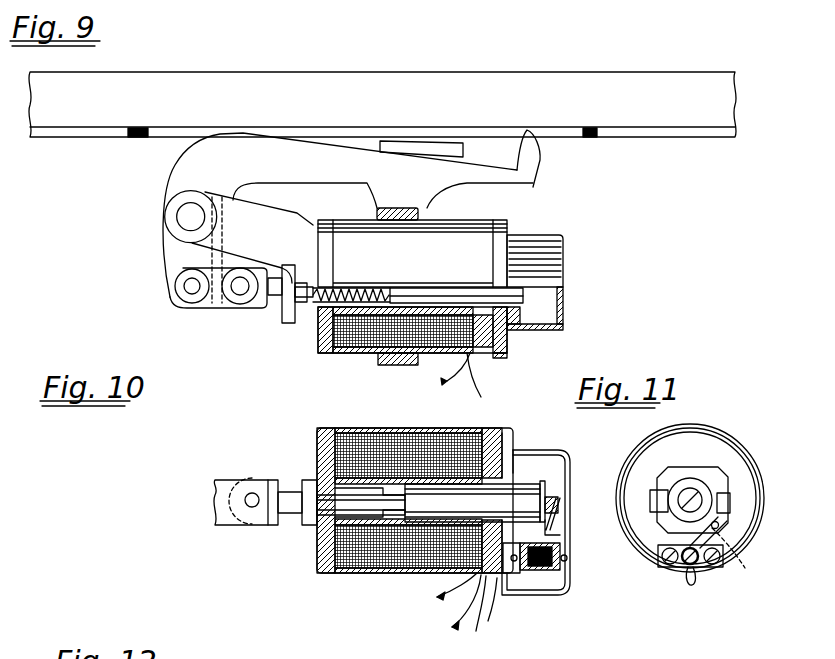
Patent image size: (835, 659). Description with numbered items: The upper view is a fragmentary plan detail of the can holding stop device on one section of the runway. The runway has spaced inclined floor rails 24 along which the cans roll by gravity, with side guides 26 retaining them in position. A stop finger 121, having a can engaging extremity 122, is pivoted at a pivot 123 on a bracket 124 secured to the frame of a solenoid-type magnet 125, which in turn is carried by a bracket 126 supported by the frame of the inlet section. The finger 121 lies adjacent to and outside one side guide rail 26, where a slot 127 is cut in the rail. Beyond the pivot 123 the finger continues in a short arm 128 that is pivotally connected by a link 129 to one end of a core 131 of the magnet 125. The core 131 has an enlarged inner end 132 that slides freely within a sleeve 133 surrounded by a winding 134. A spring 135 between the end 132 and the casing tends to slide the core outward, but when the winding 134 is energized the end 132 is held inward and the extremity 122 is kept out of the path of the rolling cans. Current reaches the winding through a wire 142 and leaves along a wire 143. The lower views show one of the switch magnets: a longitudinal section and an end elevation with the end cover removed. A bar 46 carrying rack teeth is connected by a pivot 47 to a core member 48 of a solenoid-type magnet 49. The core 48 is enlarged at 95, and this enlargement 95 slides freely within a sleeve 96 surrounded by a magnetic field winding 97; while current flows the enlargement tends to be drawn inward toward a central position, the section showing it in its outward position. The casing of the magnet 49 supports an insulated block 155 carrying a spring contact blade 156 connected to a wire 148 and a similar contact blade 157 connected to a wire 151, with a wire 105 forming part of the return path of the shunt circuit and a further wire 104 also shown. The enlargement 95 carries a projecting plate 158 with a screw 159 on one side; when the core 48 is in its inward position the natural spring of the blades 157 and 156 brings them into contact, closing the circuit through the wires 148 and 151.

In FIG. 9, the floor rails 24 is at (107, 85).
In FIG. 9, the side guides 26 is at (68, 132).
In FIG. 9, the slot 127 is at (168, 132).
In FIG. 9, the bracket 126 is at (441, 147).
In FIG. 9, the stop finger 121 is at (348, 215).
In FIG. 9, the can engaging extremity 122 is at (535, 157).
In FIG. 9, the pivot 123 is at (188, 218).
In FIG. 9, the bracket 124 is at (252, 237).
In FIG. 9, the magnet 125 is at (463, 237).
In FIG. 9, the short arm 128 is at (178, 257).
In FIG. 9, the link 129 is at (216, 306).
In FIG. 9, the core 131 is at (275, 303).
In FIG. 9, the enlarged inner end 132 is at (409, 288).
In FIG. 9, the sleeve 133 is at (563, 311).
In FIG. 9, the winding 134 is at (360, 338).
In FIG. 9, the spring 135 is at (351, 290).
In FIG. 9, the wire 142 is at (484, 397).
In FIG. 9, the wire 143 is at (444, 383).
In FIG. 10, the bar 46 is at (221, 480).
In FIG. 10, the pivot 47 is at (252, 496).
In FIG. 10, the core member 48 is at (293, 516).
In FIG. 10, the magnet 49 is at (347, 574).
In FIG. 10, the magnetic field winding 97 is at (353, 452).
In FIG. 10, the sleeve 96 is at (495, 478).
In FIG. 10, the enlargement 95 is at (472, 503).
In FIG. 10, the projecting plate 158 is at (546, 482).
In FIG. 11, the projecting plate 158 is at (697, 490).
In FIG. 10, the screw 159 is at (556, 496).
In FIG. 11, the screw 159 is at (718, 497).
In FIG. 10, the contact blade 157 is at (562, 505).
In FIG. 11, the contact blade 157 is at (722, 518).
In FIG. 10, the spring contact blade 156 is at (548, 533).
In FIG. 11, the spring contact blade 156 is at (742, 568).
In FIG. 10, the insulated block 155 is at (568, 583).
In FIG. 11, the insulated block 155 is at (675, 567).
In FIG. 10, the lead wire 104 is at (436, 597).
In FIG. 10, the wire 105 is at (451, 627).
In FIG. 10, the wire 151 is at (492, 622).
In FIG. 11, the wire 151 is at (700, 573).
In FIG. 10, the wire 148 is at (489, 633).